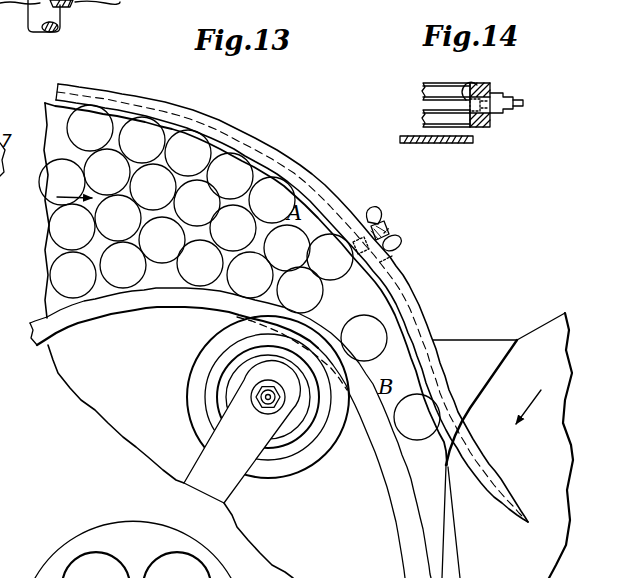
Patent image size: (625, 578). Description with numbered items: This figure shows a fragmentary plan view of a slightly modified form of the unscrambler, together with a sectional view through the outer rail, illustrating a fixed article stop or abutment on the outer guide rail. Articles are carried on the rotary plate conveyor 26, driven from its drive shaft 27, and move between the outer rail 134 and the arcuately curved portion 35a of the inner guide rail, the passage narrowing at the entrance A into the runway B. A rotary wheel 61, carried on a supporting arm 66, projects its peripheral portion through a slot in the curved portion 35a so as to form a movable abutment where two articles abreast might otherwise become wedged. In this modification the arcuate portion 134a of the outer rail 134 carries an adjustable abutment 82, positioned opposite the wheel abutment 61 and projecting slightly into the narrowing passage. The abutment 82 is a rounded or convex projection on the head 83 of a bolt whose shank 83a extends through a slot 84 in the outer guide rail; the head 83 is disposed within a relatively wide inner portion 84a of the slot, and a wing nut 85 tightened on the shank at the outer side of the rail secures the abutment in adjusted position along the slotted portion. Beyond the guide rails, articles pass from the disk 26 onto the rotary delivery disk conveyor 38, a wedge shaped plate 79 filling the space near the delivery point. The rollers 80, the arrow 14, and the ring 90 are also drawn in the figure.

In FIG. 13, the outer rail 134 is at (101, 88).
In FIG. 13, the arcuate portion 134a is at (307, 170).
In FIG. 14, the arcuate portion 134a is at (438, 90).
In FIG. 13, the adjustable abutment 82 is at (343, 241).
In FIG. 14, the adjustable abutment 82 is at (473, 112).
In FIG. 13, the head 83 is at (380, 258).
In FIG. 14, the head 83 is at (480, 118).
In FIG. 13, the shank 83a is at (386, 222).
In FIG. 14, the shank 83a is at (492, 122).
In FIG. 13, the slot 84 is at (411, 296).
In FIG. 14, the slot 84 is at (497, 94).
In FIG. 13, the wide inner portion of the slot 84a is at (387, 278).
In FIG. 14, the wide inner portion of the slot 84a is at (466, 93).
In FIG. 13, the wing nut 85 is at (400, 239).
In FIG. 14, the wing nut 85 is at (518, 104).
In FIG. 13, the rollers 80 is at (356, 281).
In FIG. 13, the direction of movement 14 is at (400, 226).
In FIG. 13, the rotary plate conveyor 26 is at (397, 348).
In FIG. 14, the rotary plate conveyor 26 is at (460, 144).
In FIG. 13, the wedge shaped plate 79 is at (467, 353).
In FIG. 13, the rotary delivery disk conveyor 38 is at (540, 327).
In FIG. 13, the arcuately curved portion of the inner guide rail 35a is at (162, 302).
In FIG. 13, the rotary wheel 61 is at (307, 433).
In FIG. 13, the supporting arm 66 is at (225, 482).
In FIG. 13, the ring 90 is at (115, 549).
In FIG. 13, the drive shaft 27 is at (52, 17).